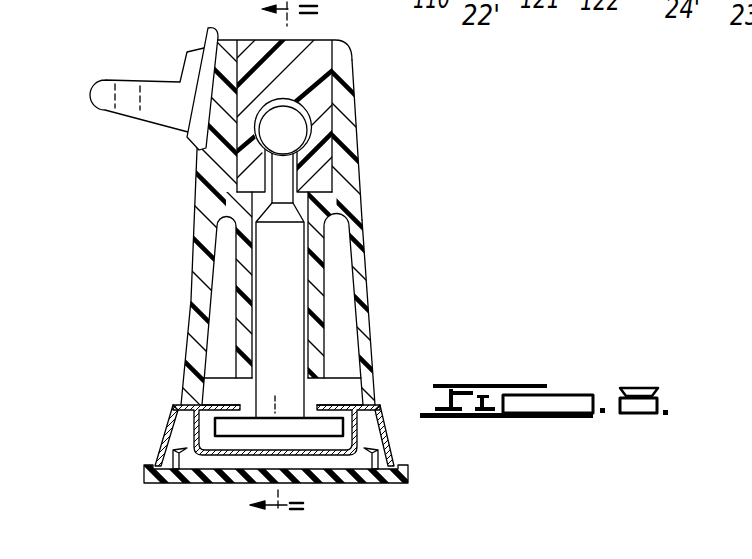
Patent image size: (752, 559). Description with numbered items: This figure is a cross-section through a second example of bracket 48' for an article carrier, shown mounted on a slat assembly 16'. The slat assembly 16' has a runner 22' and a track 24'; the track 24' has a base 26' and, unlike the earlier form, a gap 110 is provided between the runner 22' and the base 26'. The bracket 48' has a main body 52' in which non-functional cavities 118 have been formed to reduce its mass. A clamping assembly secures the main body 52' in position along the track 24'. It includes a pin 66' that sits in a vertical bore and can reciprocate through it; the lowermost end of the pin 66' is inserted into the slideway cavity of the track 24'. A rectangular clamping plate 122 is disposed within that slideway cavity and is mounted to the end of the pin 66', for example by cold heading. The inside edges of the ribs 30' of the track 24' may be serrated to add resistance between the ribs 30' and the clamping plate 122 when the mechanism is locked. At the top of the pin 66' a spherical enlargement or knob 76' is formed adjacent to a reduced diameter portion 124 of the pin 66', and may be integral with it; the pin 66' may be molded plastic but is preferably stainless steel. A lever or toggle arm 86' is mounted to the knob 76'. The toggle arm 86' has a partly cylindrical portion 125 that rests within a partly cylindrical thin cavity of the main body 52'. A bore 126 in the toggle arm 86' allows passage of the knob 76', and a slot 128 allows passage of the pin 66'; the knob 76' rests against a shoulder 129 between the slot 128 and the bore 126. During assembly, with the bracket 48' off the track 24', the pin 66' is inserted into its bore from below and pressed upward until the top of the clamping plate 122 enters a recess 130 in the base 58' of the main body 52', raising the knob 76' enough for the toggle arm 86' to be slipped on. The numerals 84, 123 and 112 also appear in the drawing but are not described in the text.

The actuating lever 84 is at (251, 32).
The toggle arm 86' is at (277, 103).
The bracket 48' is at (340, 225).
The main body 52' is at (391, 140).
The base 58' is at (395, 312).
The bore 126 is at (305, 106).
The knob 76' is at (339, 130).
The shoulder 129 is at (328, 150).
The partly cylindrical portion 125 is at (247, 160).
The reduced diameter portion 124 is at (272, 180).
The slot 128 is at (262, 215).
The pin 66' is at (280, 285).
The non-functional cavities 118 is at (225, 280).
The clamping plate 122 is at (214, 403).
The recess 130 is at (340, 384).
The piston foot 123 is at (279, 390).
The ribs 30' is at (237, 388).
The track 24' is at (229, 430).
The slat assembly 16' is at (232, 435).
The base 26' is at (242, 471).
The left clip 112 is at (265, 463).
The gap 110 is at (350, 467).
The runner 22' is at (278, 501).